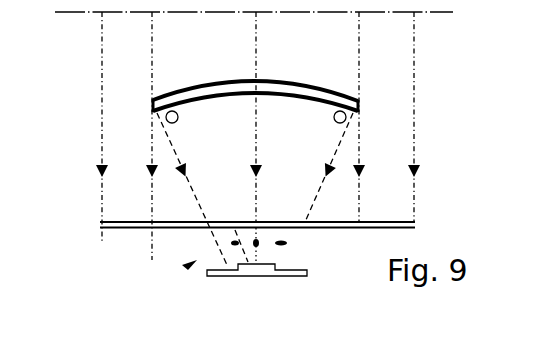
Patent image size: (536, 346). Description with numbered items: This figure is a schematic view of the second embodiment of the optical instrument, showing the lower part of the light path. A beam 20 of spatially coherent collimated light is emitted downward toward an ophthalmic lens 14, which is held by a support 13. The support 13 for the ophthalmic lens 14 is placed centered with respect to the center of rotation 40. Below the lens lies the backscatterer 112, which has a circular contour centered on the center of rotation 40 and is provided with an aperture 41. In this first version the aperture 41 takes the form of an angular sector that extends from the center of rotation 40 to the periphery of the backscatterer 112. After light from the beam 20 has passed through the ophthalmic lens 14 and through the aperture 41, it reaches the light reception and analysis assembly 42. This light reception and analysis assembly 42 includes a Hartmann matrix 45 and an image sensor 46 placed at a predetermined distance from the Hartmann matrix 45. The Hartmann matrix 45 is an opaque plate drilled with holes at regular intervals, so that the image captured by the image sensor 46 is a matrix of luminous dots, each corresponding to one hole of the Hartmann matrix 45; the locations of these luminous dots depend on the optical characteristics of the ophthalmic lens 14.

The beam 20 is at (167, 76).
The ophthalmic lens 14 is at (193, 86).
The support 13 is at (177, 123).
The aperture 41 is at (128, 229).
The center of rotation 40 is at (256, 222).
The backscatterer 112 is at (386, 223).
The Hartmann matrix 45 is at (289, 245).
The image sensor 46 is at (305, 277).
The light reception and analysis assembly 42 is at (183, 267).